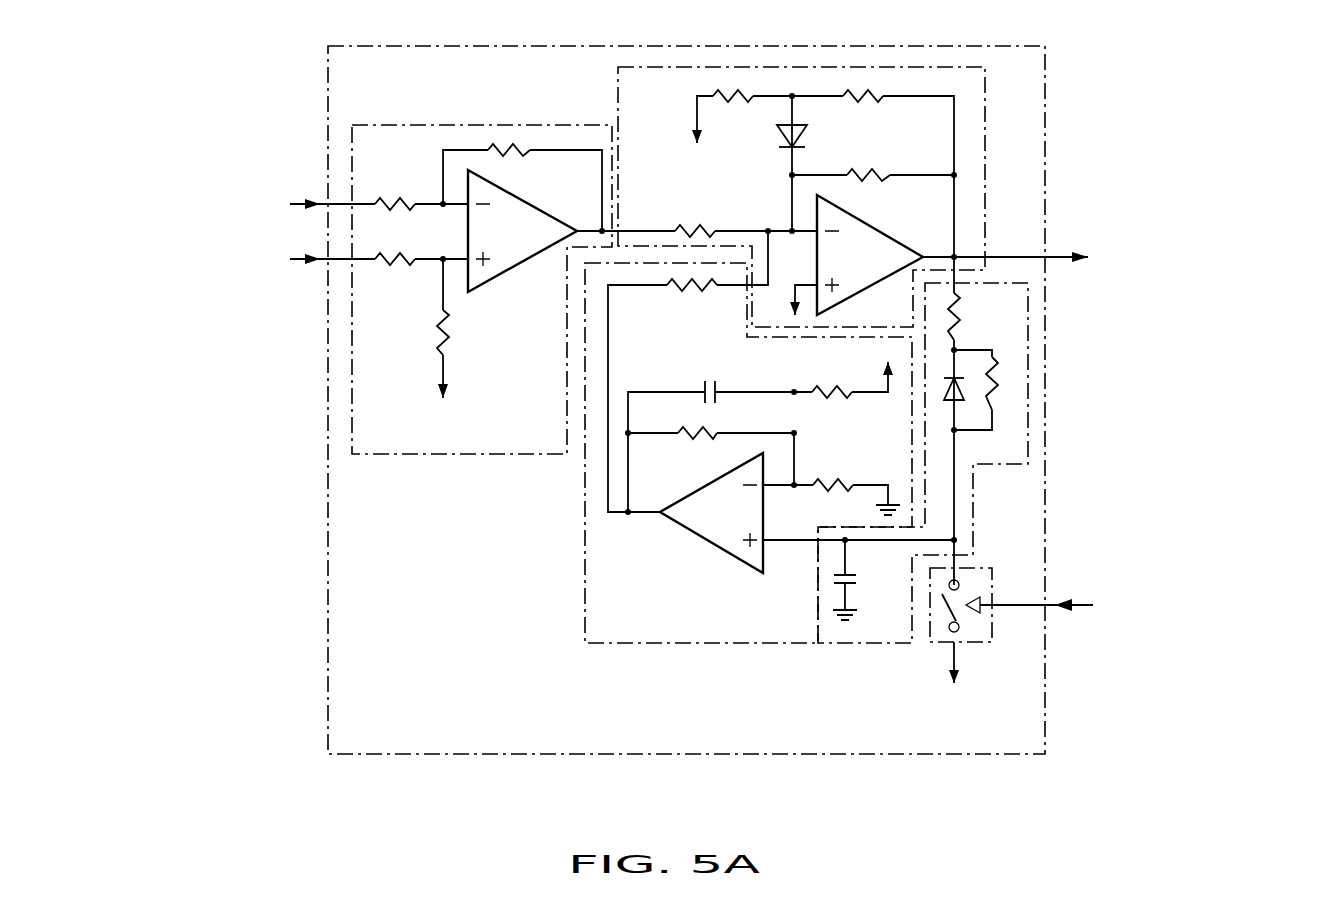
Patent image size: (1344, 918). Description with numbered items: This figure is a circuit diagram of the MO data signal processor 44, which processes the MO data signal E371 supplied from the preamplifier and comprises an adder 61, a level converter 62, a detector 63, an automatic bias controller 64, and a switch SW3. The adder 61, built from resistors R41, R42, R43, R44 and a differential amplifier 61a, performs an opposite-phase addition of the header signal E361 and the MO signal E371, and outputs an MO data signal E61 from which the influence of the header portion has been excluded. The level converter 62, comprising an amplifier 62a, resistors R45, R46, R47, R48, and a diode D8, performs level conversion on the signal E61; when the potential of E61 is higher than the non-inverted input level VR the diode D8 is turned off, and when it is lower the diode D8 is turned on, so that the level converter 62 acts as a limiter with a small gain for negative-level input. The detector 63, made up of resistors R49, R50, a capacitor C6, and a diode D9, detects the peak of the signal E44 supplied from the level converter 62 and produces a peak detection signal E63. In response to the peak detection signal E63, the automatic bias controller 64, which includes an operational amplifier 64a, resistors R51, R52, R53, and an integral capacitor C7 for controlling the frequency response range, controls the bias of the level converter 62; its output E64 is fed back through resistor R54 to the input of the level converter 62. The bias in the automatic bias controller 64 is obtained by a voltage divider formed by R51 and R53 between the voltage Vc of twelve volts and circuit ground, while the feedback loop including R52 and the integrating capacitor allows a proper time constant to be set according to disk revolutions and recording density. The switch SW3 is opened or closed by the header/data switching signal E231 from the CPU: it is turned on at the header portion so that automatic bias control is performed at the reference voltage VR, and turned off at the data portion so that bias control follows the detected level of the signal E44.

The MO data signal processor 44 is at (427, 756).
The adder 61 is at (550, 457).
The differential amplifier 61a is at (527, 265).
The level converter 62 is at (985, 224).
The amplifier 62a is at (909, 250).
The detector 63 is at (1025, 468).
The automatic bias controller 64 is at (810, 645).
The operational amplifier 64a is at (688, 502).
The resistor R41 is at (397, 200).
The resistor R42 is at (392, 262).
The resistor R43 is at (450, 333).
The resistor R44 is at (523, 148).
The resistor R45 is at (675, 238).
The resistor R46 is at (870, 172).
The resistor R47 is at (735, 93).
The resistor R48 is at (860, 93).
The resistor R49 is at (945, 320).
The resistor R50 is at (998, 383).
The resistor R51 is at (850, 483).
The resistor R52 is at (720, 432).
The resistor R53 is at (830, 388).
The resistor R54 is at (692, 290).
The capacitor C6 is at (855, 583).
The integral capacitor C7 is at (715, 362).
The diode D8 is at (777, 137).
The diode D9 is at (945, 396).
The switch SW3 is at (1013, 563).
The MO data signal E61 is at (603, 228).
The peak detection signal E63 is at (845, 542).
The autobias controller output signal E64 is at (745, 288).
The header signal E361 is at (223, 207).
The MO data signal E371 is at (223, 267).
The signal E44 is at (1094, 252).
The header/data switching signal E231 is at (1149, 615).